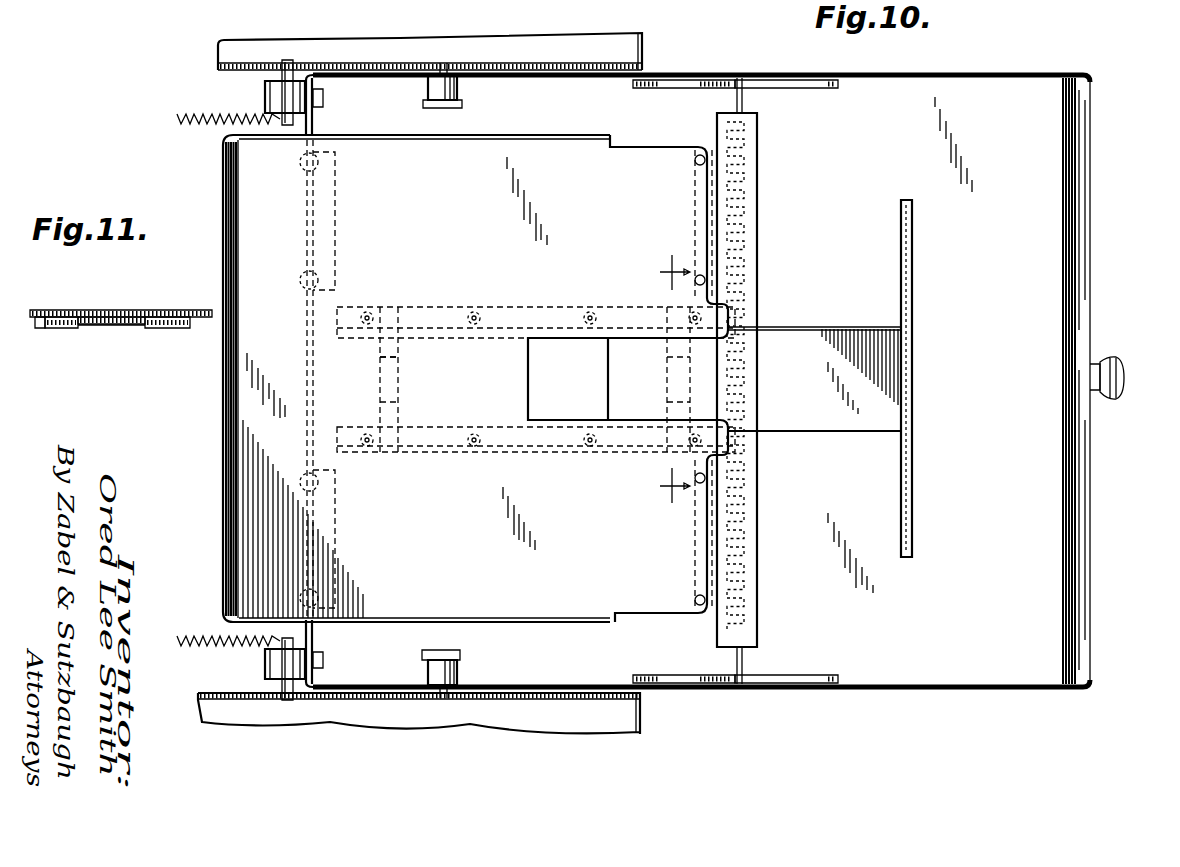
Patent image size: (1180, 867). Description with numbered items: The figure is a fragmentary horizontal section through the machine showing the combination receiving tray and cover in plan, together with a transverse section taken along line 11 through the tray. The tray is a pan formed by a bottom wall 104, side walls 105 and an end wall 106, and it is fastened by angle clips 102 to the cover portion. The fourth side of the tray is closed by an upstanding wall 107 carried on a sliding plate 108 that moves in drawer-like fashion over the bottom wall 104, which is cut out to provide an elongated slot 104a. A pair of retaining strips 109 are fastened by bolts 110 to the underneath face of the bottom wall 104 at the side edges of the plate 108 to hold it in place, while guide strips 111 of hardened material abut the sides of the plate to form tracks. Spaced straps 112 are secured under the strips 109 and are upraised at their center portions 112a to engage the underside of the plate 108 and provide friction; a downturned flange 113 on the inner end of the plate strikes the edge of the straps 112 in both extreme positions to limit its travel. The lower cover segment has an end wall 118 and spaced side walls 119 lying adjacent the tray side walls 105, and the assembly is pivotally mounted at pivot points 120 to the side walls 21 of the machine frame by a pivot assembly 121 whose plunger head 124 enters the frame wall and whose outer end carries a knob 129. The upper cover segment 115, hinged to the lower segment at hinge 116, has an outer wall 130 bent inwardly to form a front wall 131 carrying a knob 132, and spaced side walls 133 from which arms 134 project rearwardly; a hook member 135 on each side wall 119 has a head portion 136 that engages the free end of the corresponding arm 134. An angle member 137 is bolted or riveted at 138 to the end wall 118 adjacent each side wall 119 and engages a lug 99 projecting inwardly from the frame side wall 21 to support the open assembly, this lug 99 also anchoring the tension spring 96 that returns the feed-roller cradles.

In FIG. 10, the section line 11 is at (675, 387).
In FIG. 10, the side wall of the machine frame 21 is at (520, 63).
In FIG. 10, the tension spring 96 is at (190, 124).
In FIG. 10, the lug 99 is at (292, 62).
In FIG. 10, the angle clips 102 is at (334, 215).
In FIG. 10, the bottom wall 104 is at (485, 378).
In FIG. 11, the bottom wall 104 is at (72, 295).
In FIG. 10, the elongated slot 104a is at (575, 422).
In FIG. 10, the side walls 105 is at (555, 136).
In FIG. 10, the end wall 106 is at (236, 192).
In FIG. 10, the upstanding wall 107 is at (913, 293).
In FIG. 10, the sliding plate 108 is at (815, 431).
In FIG. 11, the sliding plate 108 is at (105, 312).
In FIG. 10, the retaining strips 109 is at (539, 306).
In FIG. 11, the retaining strips 109 is at (178, 328).
In FIG. 10, the bolts 110 is at (475, 307).
In FIG. 11, the guide strips 111 is at (40, 322).
In FIG. 10, the straps 112 is at (400, 412).
In FIG. 11, the straps 112 is at (80, 338).
In FIG. 10, the upraised center portion 112a is at (386, 381).
In FIG. 11, the upraised center portion 112a is at (125, 326).
In FIG. 10, the downturned flange 113 is at (606, 390).
In FIG. 10, the upper cover segment 115 is at (1009, 381).
In FIG. 10, the hinge 116 is at (757, 618).
In FIG. 10, the end wall 118 is at (316, 126).
In FIG. 10, the side walls of the lower cover segment 119 is at (697, 80).
In FIG. 10, the pivot points 120 is at (460, 62).
In FIG. 10, the pivot assembly 121 is at (460, 90).
In FIG. 10, the plunger head 124 is at (432, 64).
In FIG. 10, the knob 129 is at (463, 105).
In FIG. 10, the outer wall 130 is at (888, 690).
In FIG. 10, the front wall 131 is at (1064, 231).
In FIG. 10, the knob 132 is at (1100, 364).
In FIG. 10, the side walls of the upper cover segment 133 is at (945, 685).
In FIG. 10, the arm 134 is at (804, 88).
In FIG. 10, the hook member 135 is at (662, 88).
In FIG. 10, the head portion 136 is at (744, 79).
In FIG. 10, the angle member 137 is at (266, 90).
In FIG. 10, the bolt or rivet 138 is at (323, 98).